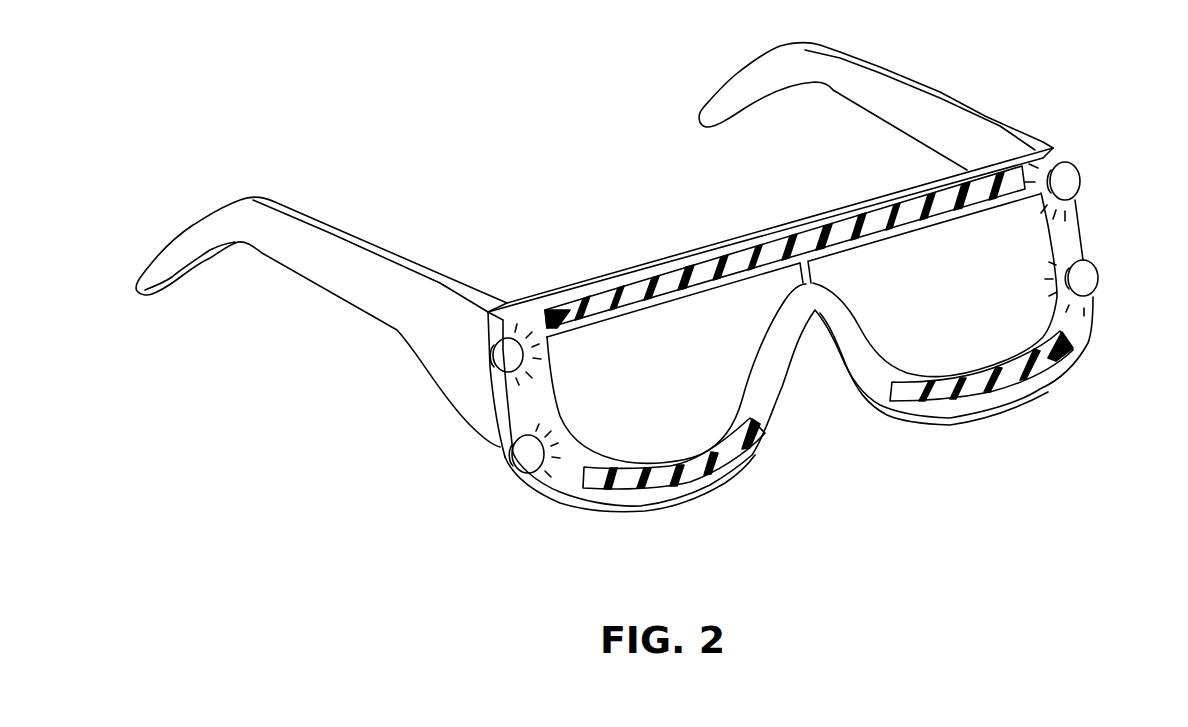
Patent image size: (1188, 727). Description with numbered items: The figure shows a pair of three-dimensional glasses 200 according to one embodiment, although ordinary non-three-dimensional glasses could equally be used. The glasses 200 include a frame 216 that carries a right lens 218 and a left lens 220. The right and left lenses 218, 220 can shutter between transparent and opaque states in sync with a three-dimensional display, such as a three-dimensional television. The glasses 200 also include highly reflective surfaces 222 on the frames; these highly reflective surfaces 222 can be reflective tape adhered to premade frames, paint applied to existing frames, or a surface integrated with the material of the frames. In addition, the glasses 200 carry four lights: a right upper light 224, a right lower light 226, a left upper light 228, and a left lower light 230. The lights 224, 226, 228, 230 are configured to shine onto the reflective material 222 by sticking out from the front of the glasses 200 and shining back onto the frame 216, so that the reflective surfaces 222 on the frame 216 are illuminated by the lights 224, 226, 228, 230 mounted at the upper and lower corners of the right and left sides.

The 3-D glasses 200 is at (455, 93).
The frame 216 is at (689, 248).
The right lens 218 is at (680, 383).
The left lens 220 is at (973, 299).
The highly reflective surfaces 222 is at (769, 230).
The right upper light 224 is at (495, 356).
The right lower light 226 is at (513, 455).
The left upper light 228 is at (1080, 178).
The left lower light 230 is at (1098, 277).